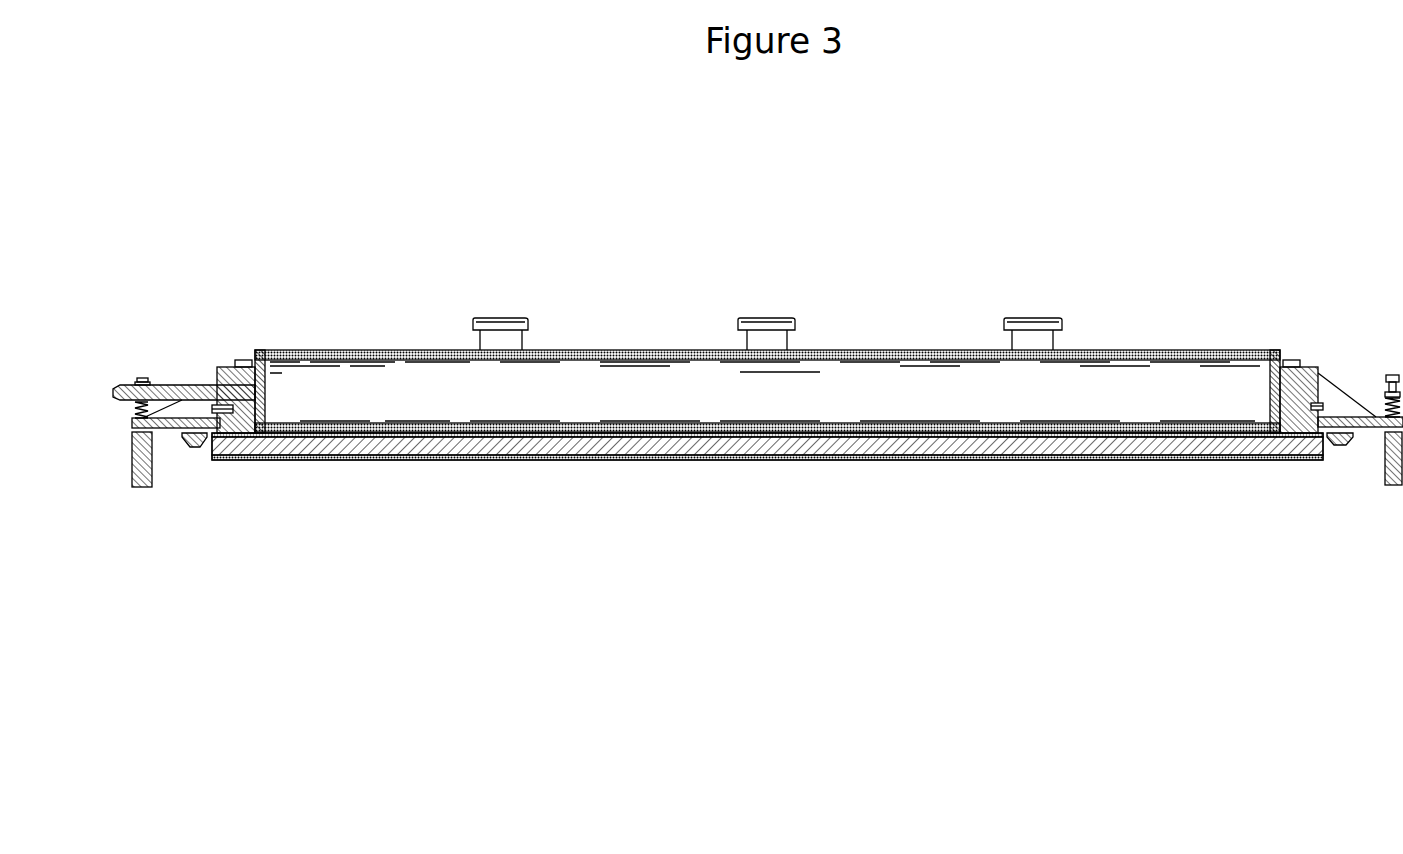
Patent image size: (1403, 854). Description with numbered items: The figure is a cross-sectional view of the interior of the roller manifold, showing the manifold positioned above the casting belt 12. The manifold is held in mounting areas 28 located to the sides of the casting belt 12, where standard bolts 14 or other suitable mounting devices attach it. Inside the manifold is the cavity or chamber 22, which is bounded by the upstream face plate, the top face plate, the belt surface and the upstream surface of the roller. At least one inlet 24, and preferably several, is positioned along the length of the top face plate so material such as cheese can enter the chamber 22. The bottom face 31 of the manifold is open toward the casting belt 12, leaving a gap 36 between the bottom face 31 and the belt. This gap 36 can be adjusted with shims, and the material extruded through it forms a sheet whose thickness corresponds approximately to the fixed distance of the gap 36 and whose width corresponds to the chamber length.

The casting belt 12 is at (1183, 437).
The bolts 14 is at (135, 378).
The chamber 22 is at (883, 378).
The inlet 24 is at (1032, 318).
The mounting areas 28 is at (172, 338).
The bottom face 31 is at (1087, 428).
The gap 36 is at (958, 430).